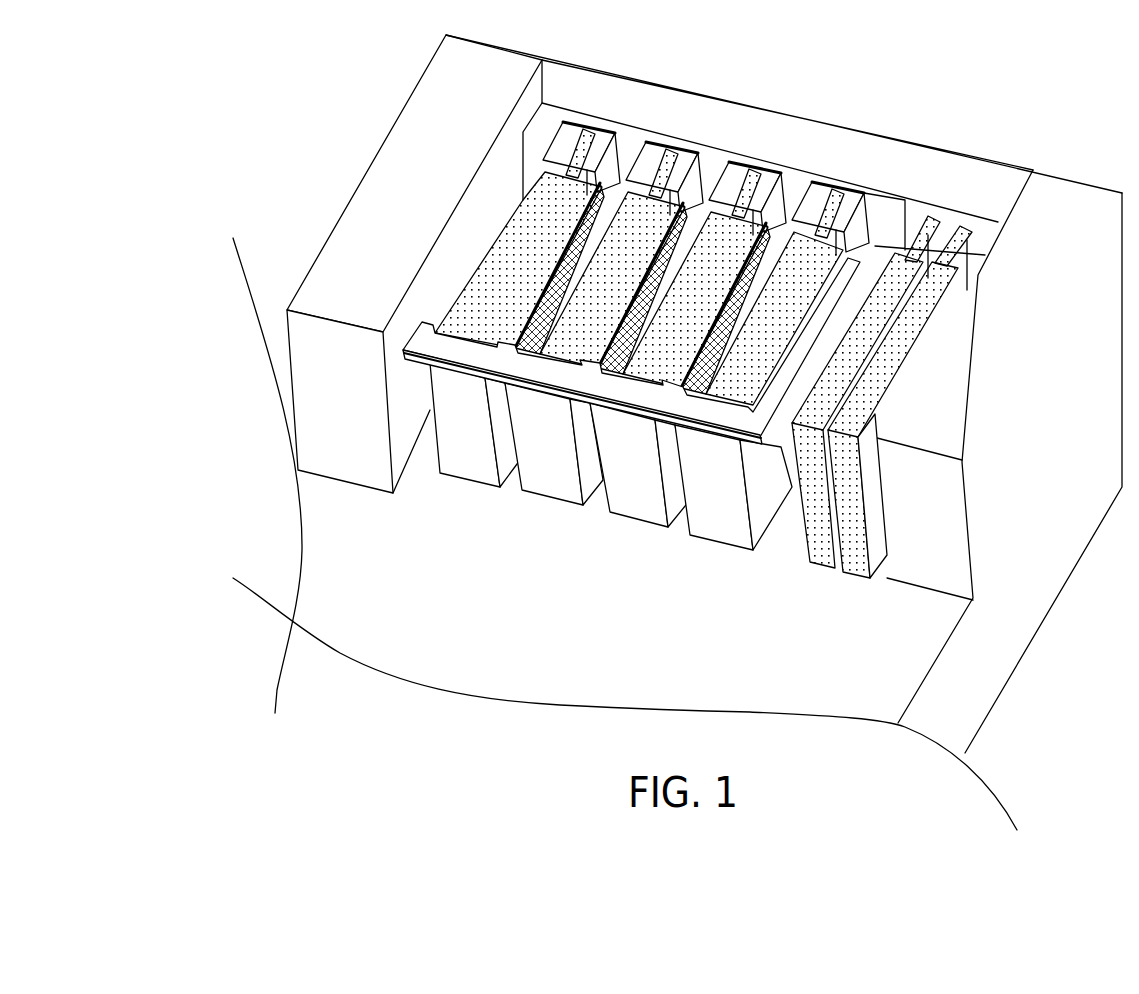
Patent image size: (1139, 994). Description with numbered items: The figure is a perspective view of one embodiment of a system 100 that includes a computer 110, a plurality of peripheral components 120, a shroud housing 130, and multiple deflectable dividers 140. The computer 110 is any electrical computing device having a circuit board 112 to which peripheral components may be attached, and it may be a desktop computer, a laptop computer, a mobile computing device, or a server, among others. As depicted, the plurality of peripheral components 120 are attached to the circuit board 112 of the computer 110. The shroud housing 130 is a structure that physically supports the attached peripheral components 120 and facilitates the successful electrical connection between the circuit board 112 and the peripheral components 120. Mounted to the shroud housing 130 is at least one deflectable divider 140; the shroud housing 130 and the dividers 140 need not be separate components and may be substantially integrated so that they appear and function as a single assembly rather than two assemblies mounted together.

The connector assembly 100 is at (640, 428).
The computer 110 is at (357, 232).
The circuit board 112 is at (728, 683).
The peripheral components 120 is at (553, 183).
The shroud housing 130 is at (735, 520).
The deflectable dividers 140 is at (520, 317).